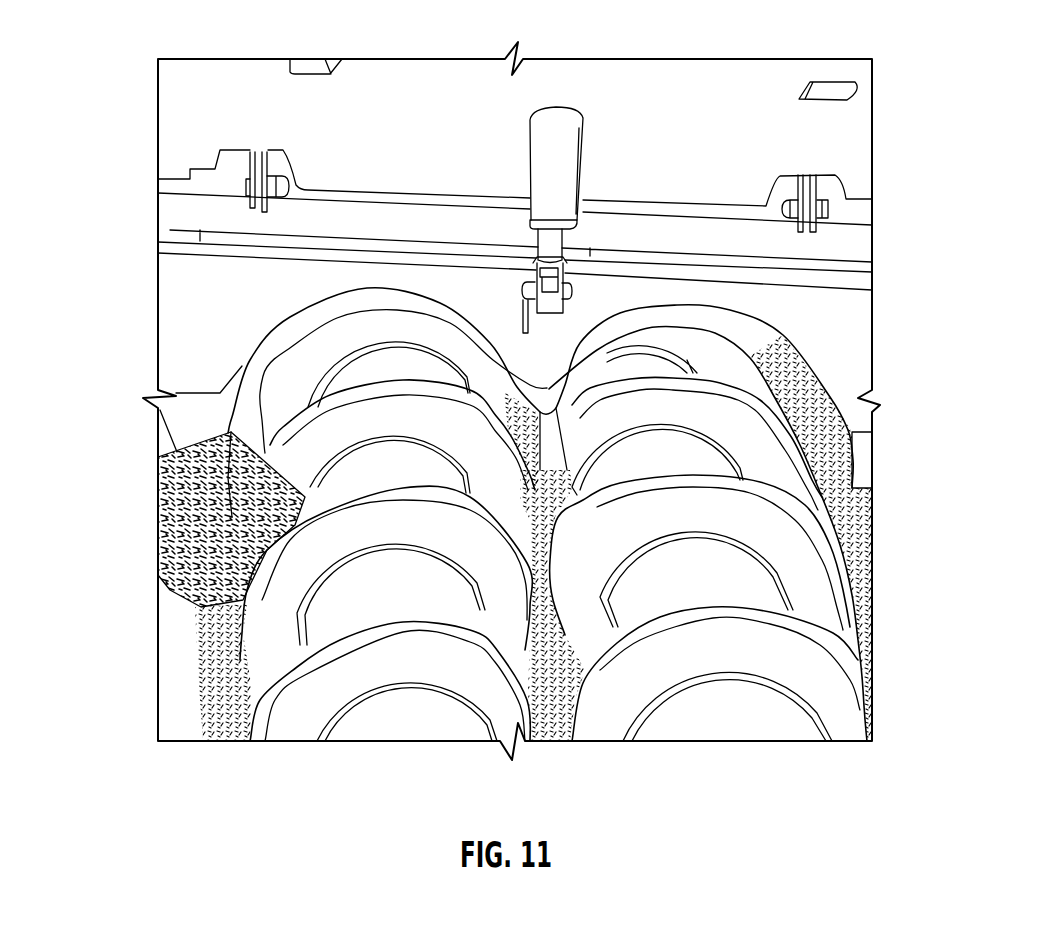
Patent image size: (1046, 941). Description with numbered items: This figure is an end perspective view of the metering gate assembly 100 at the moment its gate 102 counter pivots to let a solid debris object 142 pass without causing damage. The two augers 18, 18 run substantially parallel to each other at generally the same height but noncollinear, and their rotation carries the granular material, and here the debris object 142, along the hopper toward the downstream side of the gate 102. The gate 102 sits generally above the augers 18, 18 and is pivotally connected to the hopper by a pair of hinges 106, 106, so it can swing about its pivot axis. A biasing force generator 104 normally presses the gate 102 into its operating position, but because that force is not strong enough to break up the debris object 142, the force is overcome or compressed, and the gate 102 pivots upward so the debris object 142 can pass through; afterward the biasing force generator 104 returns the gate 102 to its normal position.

The metering gate assembly 100 is at (186, 103).
The gate 102 is at (200, 298).
The biasing force generator 104 is at (562, 168).
The hinges 106 is at (252, 165).
The augers 18 is at (422, 720).
The debris object 142 is at (165, 578).